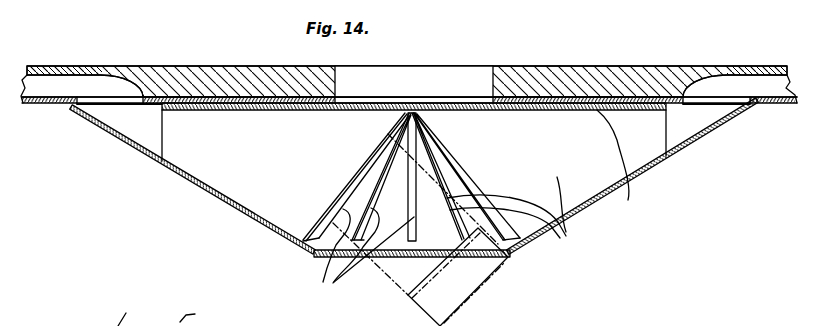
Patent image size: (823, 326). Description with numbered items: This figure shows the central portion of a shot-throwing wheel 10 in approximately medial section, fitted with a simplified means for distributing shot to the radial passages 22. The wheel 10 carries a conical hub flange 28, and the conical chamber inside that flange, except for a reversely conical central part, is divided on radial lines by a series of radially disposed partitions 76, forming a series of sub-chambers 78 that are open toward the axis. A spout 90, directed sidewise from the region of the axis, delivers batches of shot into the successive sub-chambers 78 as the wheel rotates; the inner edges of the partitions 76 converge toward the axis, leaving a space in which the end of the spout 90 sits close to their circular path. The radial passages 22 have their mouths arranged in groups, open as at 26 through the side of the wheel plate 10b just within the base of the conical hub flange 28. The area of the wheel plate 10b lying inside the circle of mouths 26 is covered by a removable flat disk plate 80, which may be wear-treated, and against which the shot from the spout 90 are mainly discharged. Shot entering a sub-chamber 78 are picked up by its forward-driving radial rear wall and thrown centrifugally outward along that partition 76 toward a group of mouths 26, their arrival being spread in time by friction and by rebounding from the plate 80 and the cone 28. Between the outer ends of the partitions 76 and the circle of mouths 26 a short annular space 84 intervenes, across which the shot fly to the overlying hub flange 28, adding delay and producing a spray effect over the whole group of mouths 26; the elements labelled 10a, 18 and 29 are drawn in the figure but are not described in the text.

The wheel 10 is at (190, 66).
The upper layer of seat 10a is at (229, 80).
The wheel plate 10b is at (38, 106).
The radial passages 22 is at (33, 88).
The annular space 84 is at (409, 132).
The mouths 26 is at (115, 103).
The conical hub flange 28 is at (187, 178).
The radially disposed partitions 76 is at (430, 234).
The sub-chambers 78 is at (411, 177).
The center post 18 is at (425, 177).
The flat disk plate 80 is at (619, 165).
The base bar 29 is at (505, 254).
The spout 90 is at (483, 293).